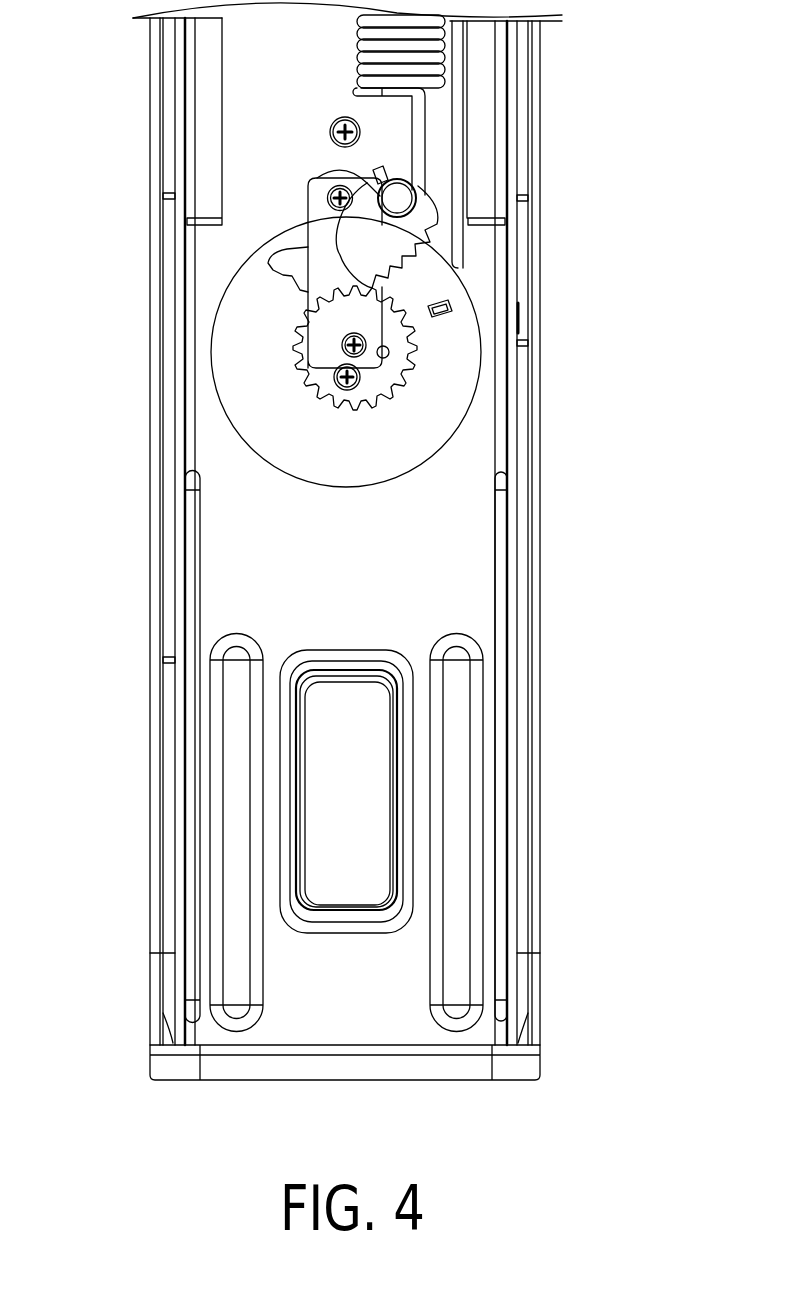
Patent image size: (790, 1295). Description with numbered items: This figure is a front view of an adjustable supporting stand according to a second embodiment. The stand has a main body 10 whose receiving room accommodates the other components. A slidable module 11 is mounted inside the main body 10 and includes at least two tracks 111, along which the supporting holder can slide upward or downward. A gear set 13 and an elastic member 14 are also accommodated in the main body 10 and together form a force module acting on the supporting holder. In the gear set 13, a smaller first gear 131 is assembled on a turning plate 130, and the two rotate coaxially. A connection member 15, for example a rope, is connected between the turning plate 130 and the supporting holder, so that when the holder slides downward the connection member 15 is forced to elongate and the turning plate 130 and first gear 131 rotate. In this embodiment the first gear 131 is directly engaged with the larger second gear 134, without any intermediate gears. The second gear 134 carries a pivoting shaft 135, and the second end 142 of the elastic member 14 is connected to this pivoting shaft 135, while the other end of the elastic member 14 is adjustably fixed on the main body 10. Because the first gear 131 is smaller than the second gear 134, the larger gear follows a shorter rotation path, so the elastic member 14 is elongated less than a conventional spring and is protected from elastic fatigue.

The main body 10 is at (150, 405).
The slidable module 11 is at (356, 531).
The tracks 111 is at (210, 48).
The gear set 13 is at (482, 288).
The turning plate 130 is at (435, 395).
The first gear 131 is at (390, 342).
The second gear 134 is at (383, 250).
The pivoting shaft 135 is at (397, 200).
The elastic member 14 is at (446, 60).
The second end 142 is at (417, 147).
The connection member 15 is at (457, 177).